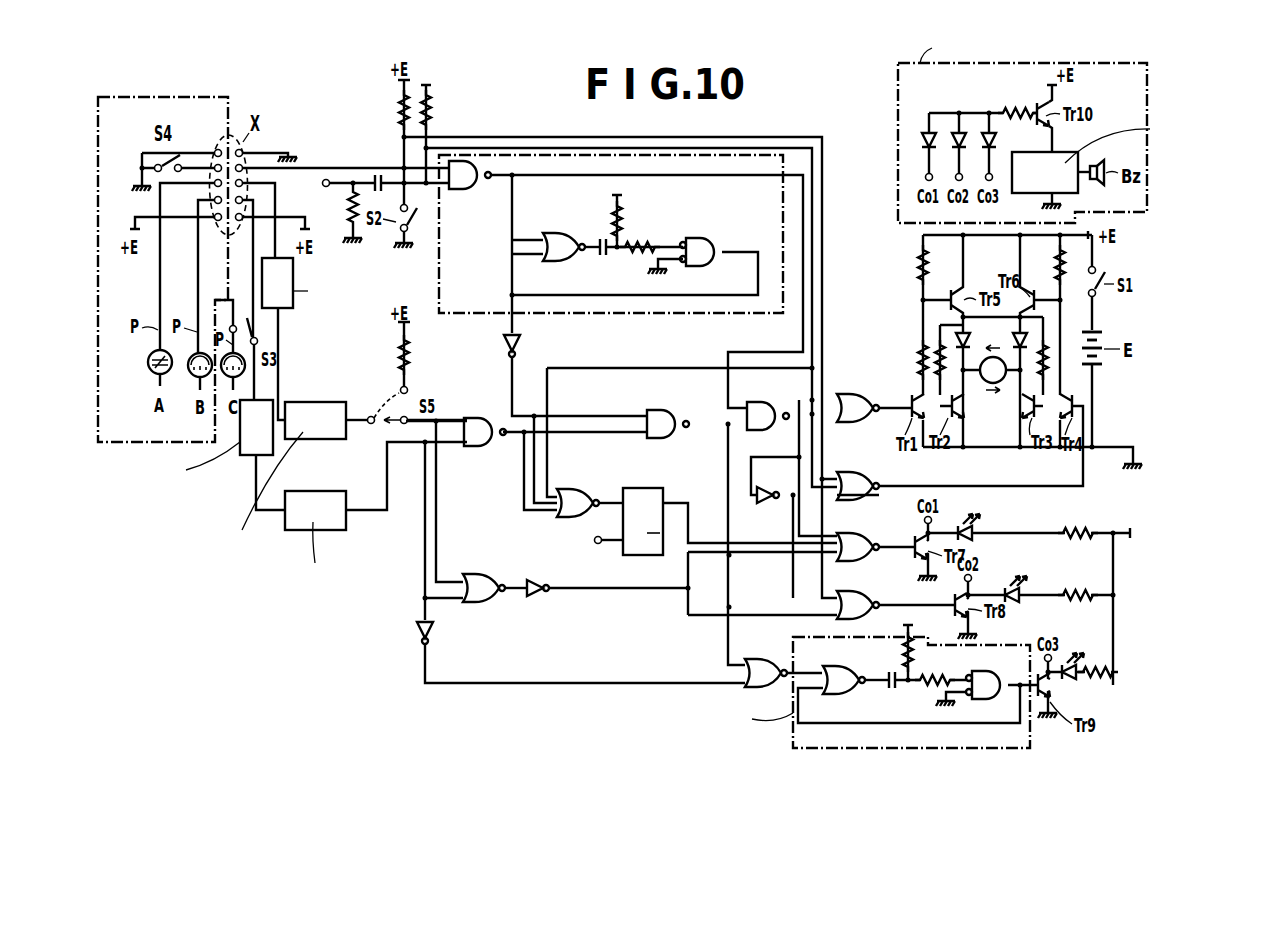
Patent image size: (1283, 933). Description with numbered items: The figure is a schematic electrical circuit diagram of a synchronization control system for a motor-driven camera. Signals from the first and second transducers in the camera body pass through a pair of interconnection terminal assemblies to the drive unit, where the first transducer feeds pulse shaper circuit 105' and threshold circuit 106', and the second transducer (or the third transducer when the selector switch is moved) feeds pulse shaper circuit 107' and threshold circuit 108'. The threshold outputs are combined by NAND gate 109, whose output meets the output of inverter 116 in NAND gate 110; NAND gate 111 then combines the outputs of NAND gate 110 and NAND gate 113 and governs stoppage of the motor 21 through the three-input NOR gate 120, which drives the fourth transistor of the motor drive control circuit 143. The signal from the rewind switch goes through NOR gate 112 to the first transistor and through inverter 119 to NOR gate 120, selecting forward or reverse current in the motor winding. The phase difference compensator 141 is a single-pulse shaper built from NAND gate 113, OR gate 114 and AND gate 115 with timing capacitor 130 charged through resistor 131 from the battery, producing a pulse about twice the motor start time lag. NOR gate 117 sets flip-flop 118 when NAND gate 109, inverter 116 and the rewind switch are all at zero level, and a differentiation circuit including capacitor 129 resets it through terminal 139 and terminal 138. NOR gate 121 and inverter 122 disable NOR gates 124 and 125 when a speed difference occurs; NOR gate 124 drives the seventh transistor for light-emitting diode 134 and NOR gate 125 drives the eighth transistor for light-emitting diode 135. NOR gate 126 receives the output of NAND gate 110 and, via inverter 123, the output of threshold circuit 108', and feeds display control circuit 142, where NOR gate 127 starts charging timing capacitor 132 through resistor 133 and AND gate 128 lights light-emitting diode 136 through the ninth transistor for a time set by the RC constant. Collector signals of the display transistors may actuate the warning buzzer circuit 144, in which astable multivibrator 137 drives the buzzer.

The drive motor 21 is at (986, 383).
The pulse shaper circuit 105' is at (314, 335).
The threshold circuit 106' is at (283, 468).
The pulse shaper circuit 107' is at (209, 463).
The threshold circuit 108' is at (376, 525).
The NAND gate 109 is at (484, 418).
The NAND gate 110 is at (658, 410).
The NAND gate 111 is at (760, 402).
The NOR gate 112 is at (860, 395).
The NAND gate 113 is at (468, 190).
The OR gate 114 is at (557, 233).
The AND gate 115 is at (705, 236).
The inverter 116 is at (522, 343).
The NOR gate 117 is at (576, 489).
The flip-flop 118 is at (665, 491).
The inverter 119 is at (765, 487).
The NOR gate 120 is at (860, 472).
The NOR gate 121 is at (481, 574).
The inverter 122 is at (540, 594).
The inverter 123 is at (436, 630).
The NOR gate 124 is at (870, 528).
The NOR gate 125 is at (868, 586).
The NOR gate 126 is at (764, 659).
The NOR gate 127 is at (850, 671).
The AND gate 128 is at (1003, 672).
The capacitor 129 is at (373, 174).
The timing capacitor 130 is at (603, 238).
The resistor 131 is at (622, 228).
The timing capacitor 132 is at (891, 690).
The resistor 133 is at (914, 656).
The light-emitting diode 134 is at (980, 521).
The light-emitting diode 135 is at (1026, 585).
The light-emitting diode 136 is at (1074, 685).
The astable multivibrator 137 is at (1038, 193).
The terminal 138 is at (557, 543).
The terminal 139 is at (343, 212).
The phase difference compensator 141 is at (458, 312).
The display control circuit 142 is at (1030, 738).
The motor drive control circuit 143 is at (1100, 316).
The warning buzzer circuit 144 is at (1147, 196).